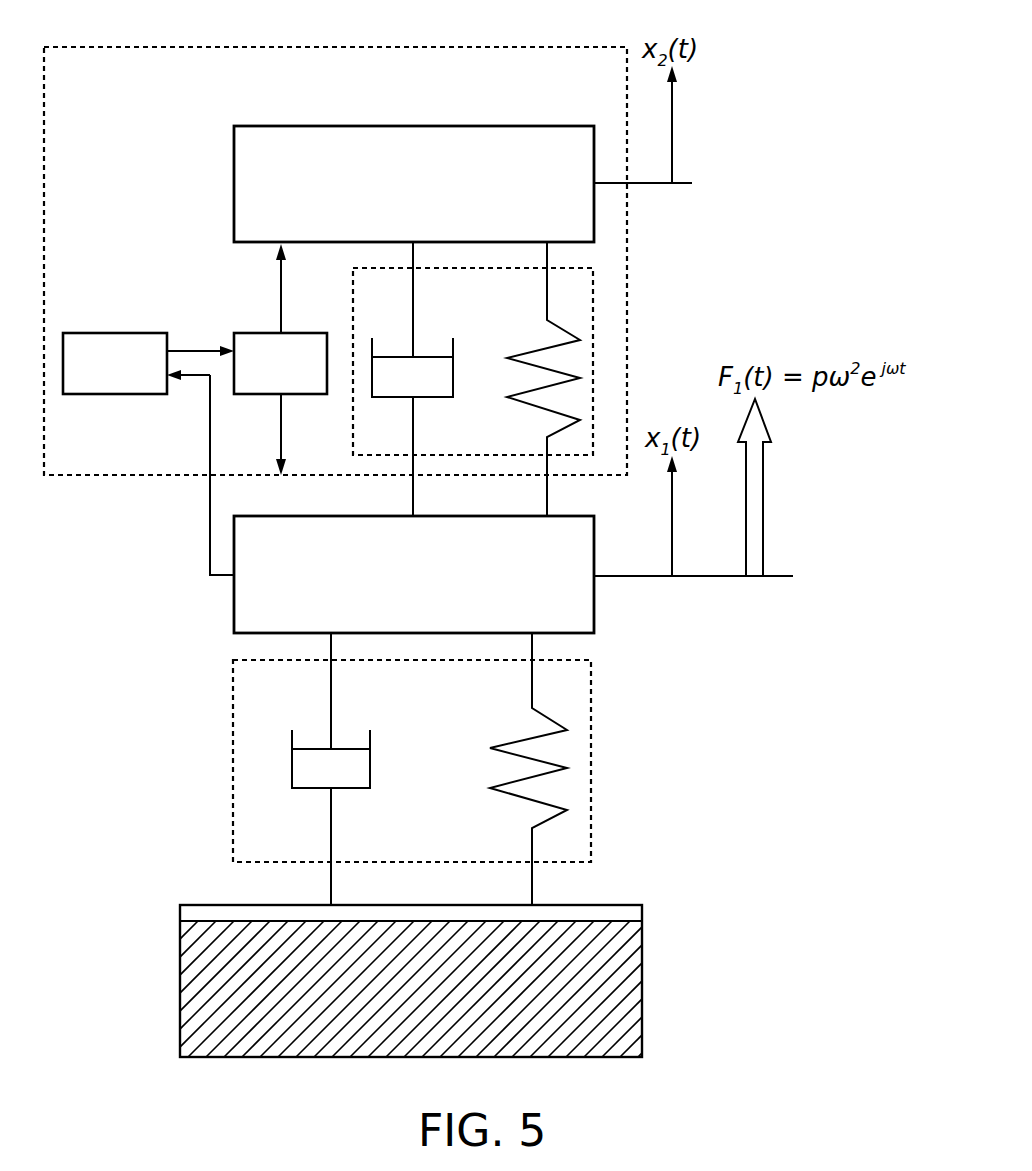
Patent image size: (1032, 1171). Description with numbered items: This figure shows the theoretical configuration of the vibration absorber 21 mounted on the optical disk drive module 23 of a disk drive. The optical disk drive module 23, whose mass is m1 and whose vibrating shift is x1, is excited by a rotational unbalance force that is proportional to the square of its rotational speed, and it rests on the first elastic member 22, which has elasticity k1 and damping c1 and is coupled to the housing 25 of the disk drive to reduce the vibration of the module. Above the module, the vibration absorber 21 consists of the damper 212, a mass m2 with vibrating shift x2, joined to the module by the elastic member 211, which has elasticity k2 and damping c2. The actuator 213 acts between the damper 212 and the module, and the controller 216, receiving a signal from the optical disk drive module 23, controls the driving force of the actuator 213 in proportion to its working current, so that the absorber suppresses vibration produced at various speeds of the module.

The vibration absorber 21 is at (532, 47).
The damper 212 is at (508, 126).
The controller 216 is at (108, 333).
The actuator 213 is at (266, 333).
The elastic member 211 is at (353, 320).
The optical disk drive module 23 is at (234, 595).
The first elastic member 22 is at (591, 762).
The housing 25 is at (642, 972).